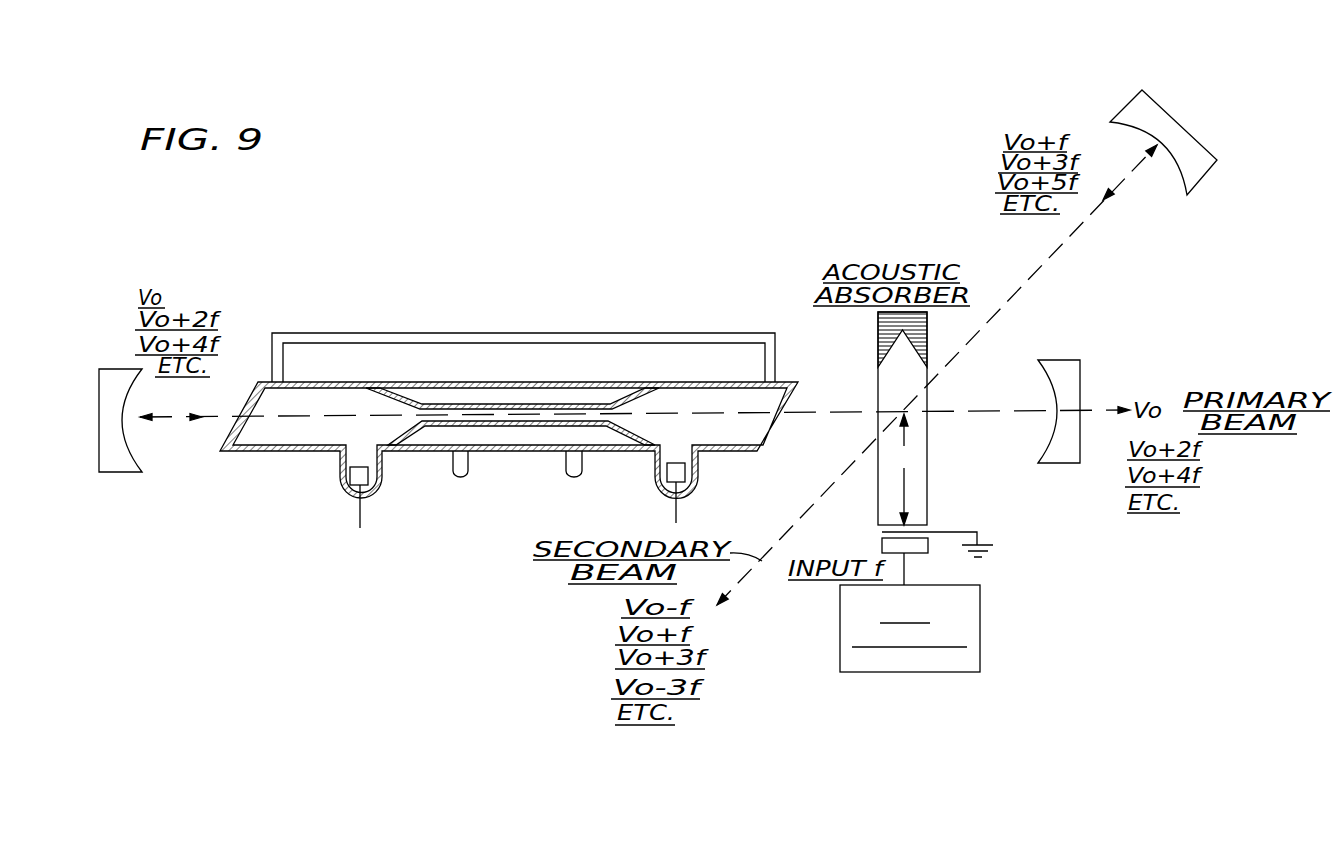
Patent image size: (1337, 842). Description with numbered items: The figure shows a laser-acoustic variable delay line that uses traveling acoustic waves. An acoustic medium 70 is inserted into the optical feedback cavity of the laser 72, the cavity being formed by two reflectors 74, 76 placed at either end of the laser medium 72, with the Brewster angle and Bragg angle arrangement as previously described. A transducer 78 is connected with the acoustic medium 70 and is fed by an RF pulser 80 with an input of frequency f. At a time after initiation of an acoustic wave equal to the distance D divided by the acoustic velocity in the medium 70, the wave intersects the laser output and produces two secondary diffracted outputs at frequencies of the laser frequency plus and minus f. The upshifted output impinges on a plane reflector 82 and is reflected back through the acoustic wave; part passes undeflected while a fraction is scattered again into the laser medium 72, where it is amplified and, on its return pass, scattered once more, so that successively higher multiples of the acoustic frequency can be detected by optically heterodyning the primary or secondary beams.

The acoustic medium 70 is at (878, 357).
The laser 72 is at (490, 386).
The reflector 74 is at (117, 472).
The reflector 76 is at (1060, 462).
The transducer 78 is at (928, 550).
The RF pulser 80 is at (977, 629).
The plane reflector 82 is at (1190, 139).